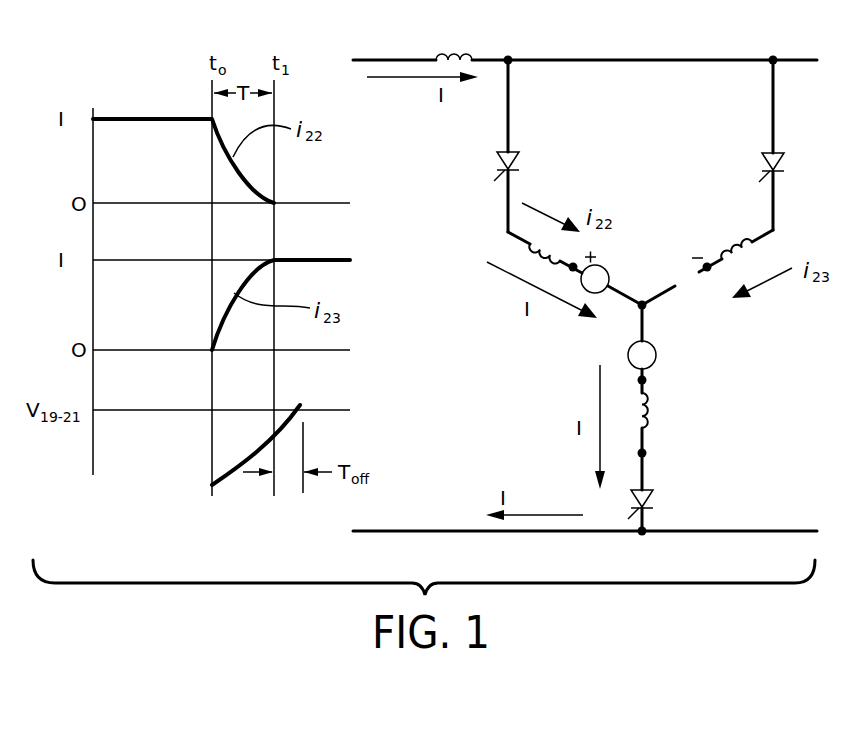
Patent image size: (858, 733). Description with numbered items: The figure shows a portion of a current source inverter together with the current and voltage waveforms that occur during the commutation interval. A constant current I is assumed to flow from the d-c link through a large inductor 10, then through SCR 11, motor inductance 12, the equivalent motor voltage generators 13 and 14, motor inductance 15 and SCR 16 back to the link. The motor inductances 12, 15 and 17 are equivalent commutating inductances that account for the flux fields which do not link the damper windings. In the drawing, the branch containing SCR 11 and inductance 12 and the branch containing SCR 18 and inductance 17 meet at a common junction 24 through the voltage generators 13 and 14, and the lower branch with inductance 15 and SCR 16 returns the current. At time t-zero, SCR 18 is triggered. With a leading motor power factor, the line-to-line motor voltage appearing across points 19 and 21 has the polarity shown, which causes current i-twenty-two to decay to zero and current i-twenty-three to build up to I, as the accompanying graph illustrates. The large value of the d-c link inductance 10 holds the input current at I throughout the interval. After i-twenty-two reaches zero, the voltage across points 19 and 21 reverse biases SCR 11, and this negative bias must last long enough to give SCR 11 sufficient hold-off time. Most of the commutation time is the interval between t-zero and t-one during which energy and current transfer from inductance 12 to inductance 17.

The large inductor 10 is at (458, 54).
The SCR 11 is at (517, 164).
The motor inductance 12 is at (547, 246).
The equivalent motor voltage generator 13 is at (603, 267).
The equivalent motor voltage generator 14 is at (630, 348).
The motor inductance 15 is at (639, 414).
The SCR 16 is at (652, 500).
The motor inductance 17 is at (734, 251).
The SCR 18 is at (784, 165).
The point 19 is at (569, 271).
The point 21 is at (712, 270).
The common junction 24 is at (646, 305).